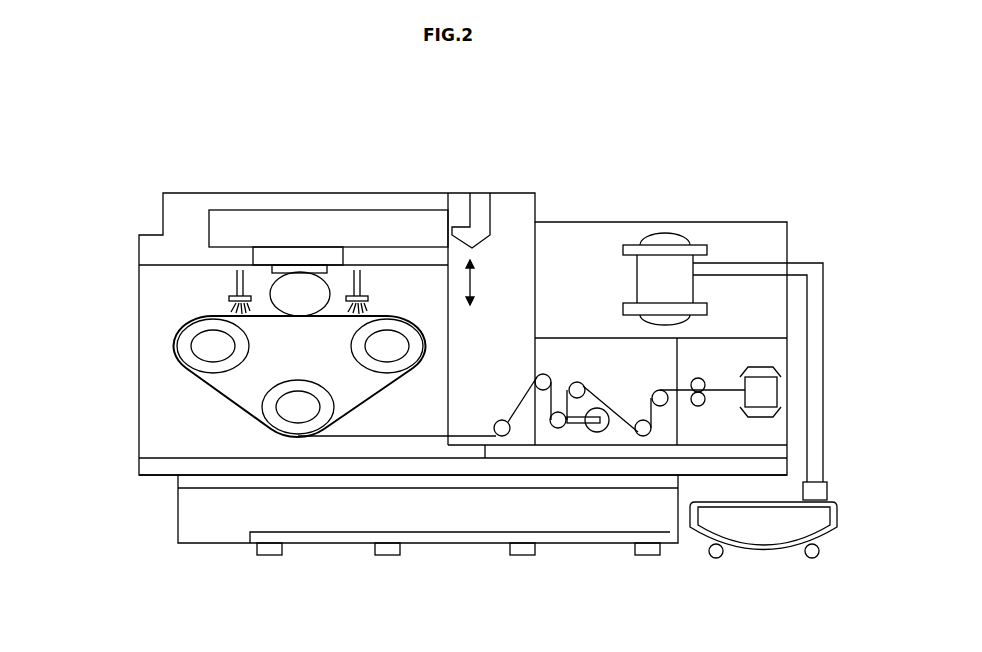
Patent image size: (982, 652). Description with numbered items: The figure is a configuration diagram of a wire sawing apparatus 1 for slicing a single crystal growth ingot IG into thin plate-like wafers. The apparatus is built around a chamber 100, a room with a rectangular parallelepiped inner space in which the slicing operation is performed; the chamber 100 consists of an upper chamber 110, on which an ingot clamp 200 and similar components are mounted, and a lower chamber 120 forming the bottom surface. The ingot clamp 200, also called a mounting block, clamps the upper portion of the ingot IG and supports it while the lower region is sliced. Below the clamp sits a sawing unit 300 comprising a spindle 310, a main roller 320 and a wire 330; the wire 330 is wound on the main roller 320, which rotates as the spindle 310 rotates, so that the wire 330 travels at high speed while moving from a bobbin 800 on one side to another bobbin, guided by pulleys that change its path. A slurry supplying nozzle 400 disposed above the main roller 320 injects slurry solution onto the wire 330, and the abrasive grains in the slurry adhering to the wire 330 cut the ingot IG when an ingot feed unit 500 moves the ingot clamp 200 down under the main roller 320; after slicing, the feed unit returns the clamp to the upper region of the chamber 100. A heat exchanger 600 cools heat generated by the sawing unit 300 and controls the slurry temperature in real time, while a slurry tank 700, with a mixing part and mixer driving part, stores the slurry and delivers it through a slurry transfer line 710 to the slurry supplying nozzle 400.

The wire sawing apparatus 1 is at (434, 113).
The chamber 100 is at (138, 333).
The upper chamber 110 is at (172, 203).
The lower chamber 120 is at (150, 465).
The ingot clamp 200 is at (240, 257).
The sawing unit 300 is at (208, 386).
The spindle 310 is at (178, 352).
The main roller 320 is at (202, 347).
The wire 330 is at (212, 396).
The slurry supplying nozzle 400 is at (220, 293).
The ingot IG is at (298, 285).
The ingot feed unit 500 is at (478, 195).
The heat exchanger 600 is at (674, 230).
The slurry tank 700 is at (758, 560).
The slurry transfer line 710 is at (823, 355).
The bobbin 800 is at (770, 385).